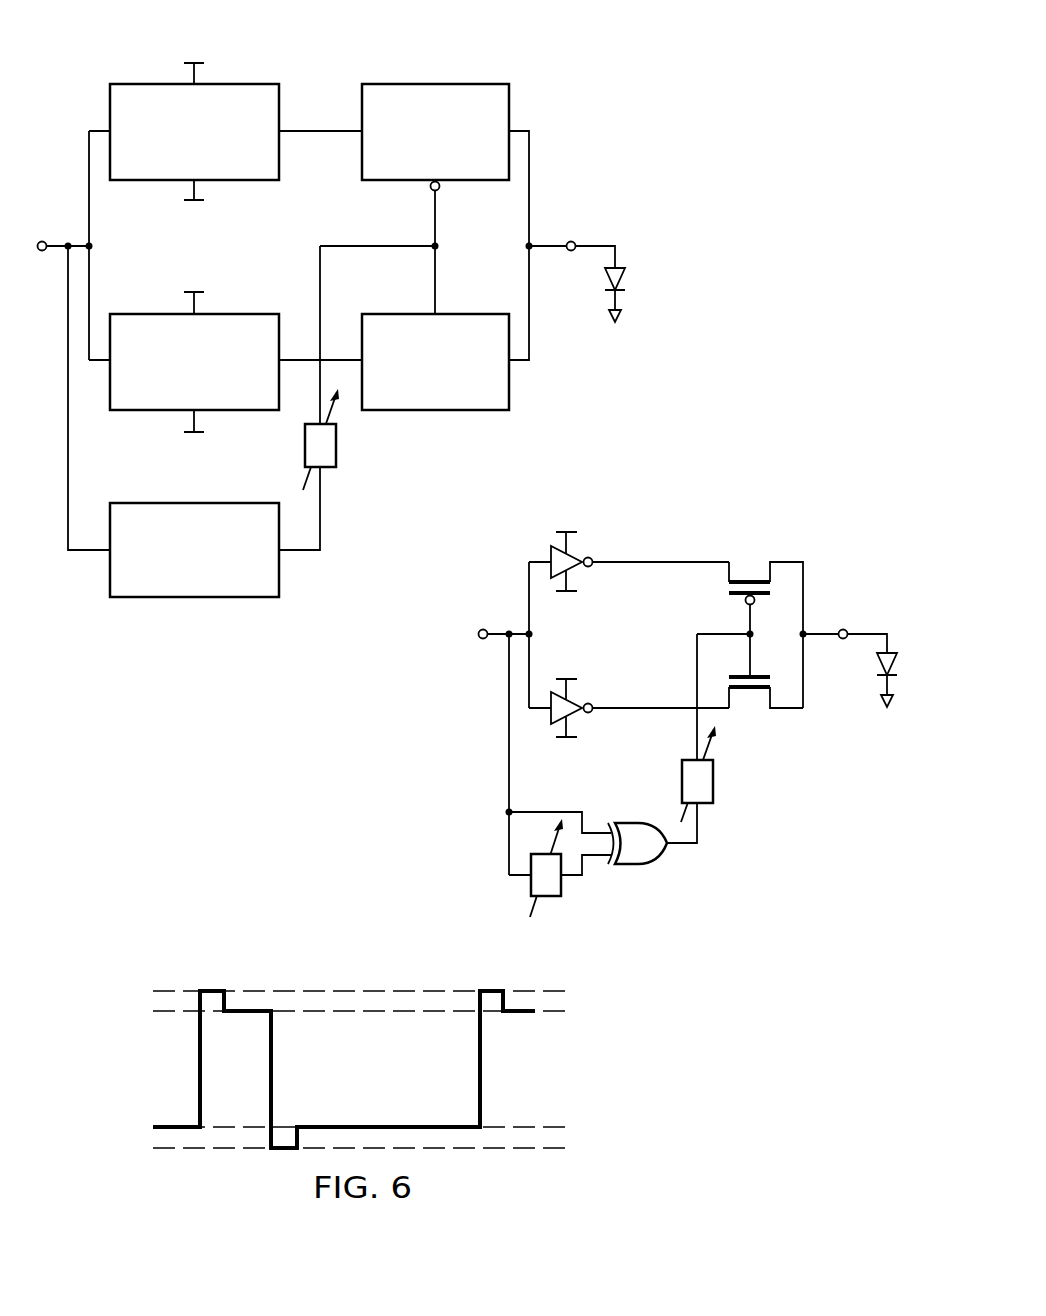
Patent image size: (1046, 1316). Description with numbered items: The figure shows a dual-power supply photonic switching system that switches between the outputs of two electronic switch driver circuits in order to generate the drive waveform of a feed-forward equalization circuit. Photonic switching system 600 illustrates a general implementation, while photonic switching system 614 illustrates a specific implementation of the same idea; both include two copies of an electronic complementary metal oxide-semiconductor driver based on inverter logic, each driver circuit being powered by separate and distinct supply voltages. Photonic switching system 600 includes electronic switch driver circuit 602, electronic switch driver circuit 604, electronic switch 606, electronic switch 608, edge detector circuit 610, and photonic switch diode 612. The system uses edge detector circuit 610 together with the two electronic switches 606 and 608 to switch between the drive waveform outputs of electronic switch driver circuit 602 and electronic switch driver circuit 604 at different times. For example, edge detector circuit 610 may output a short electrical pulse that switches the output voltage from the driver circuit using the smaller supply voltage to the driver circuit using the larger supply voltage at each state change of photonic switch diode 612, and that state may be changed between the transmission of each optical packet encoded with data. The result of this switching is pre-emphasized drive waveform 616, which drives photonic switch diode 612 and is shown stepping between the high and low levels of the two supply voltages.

The photonic switching system 600 is at (570, 110).
The electronic switch driver circuit 602 is at (143, 84).
The electronic switch driver circuit 604 is at (143, 410).
The electronic switch 606 is at (443, 84).
The electronic switch 608 is at (446, 411).
The edge detector circuit 610 is at (185, 598).
The photonic switch diode 612 is at (603, 322).
The photonic switching system 614 is at (775, 535).
The pre-emphasized drive waveform 616 is at (588, 987).